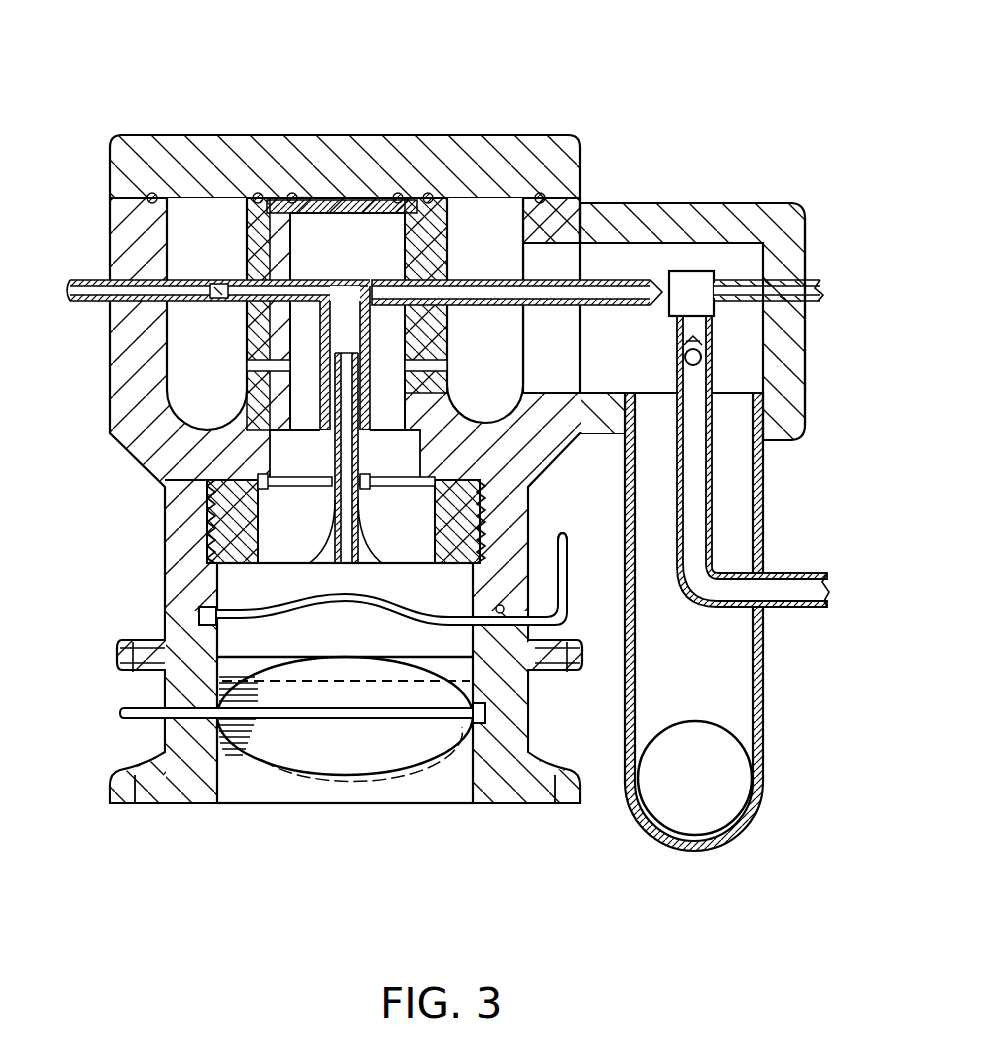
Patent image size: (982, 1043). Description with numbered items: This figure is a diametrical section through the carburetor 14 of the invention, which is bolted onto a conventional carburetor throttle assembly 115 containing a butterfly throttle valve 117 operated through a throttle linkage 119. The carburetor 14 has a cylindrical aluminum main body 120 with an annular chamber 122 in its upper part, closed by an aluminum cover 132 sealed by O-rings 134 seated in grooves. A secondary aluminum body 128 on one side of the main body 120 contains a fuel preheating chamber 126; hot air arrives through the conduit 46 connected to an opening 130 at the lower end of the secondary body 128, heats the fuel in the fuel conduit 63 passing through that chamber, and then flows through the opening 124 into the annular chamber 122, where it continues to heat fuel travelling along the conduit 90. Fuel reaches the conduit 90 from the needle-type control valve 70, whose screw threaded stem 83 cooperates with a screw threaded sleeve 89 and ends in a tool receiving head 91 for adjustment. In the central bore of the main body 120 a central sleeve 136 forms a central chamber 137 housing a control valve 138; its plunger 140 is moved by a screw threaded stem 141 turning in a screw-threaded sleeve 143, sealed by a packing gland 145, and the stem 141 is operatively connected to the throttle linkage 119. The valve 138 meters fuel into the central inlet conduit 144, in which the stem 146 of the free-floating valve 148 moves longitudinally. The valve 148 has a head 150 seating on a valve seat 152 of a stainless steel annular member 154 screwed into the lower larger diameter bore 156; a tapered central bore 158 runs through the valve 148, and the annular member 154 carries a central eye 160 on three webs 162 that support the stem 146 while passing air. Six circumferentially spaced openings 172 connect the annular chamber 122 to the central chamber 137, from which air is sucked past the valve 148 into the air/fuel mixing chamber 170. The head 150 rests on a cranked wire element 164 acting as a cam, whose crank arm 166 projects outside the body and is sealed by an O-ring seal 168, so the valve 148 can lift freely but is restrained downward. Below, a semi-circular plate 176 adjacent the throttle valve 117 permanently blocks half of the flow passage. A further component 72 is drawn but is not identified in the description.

The carburetor 14 is at (110, 87).
The conduit 46 is at (648, 828).
The fuel conduit 63 is at (778, 608).
The control valve 70 is at (655, 250).
The check valve 72 is at (702, 358).
The screw threaded stem 83 is at (765, 262).
The screw threaded sleeve 89 is at (752, 281).
The conduit 90 is at (485, 307).
The tool receiving head 91 is at (817, 281).
The carburetor throttle assembly 115 is at (173, 735).
The throttle valve 117 is at (353, 757).
The throttle linkage 119 is at (140, 716).
The main body 120 is at (118, 367).
The annular chamber 122 is at (188, 210).
The opening 124 is at (536, 244).
The fuel preheating chamber 126 is at (808, 242).
The secondary body 128 is at (648, 208).
The opening 130 is at (722, 478).
The cover 132 is at (398, 152).
The O-rings 134 is at (152, 193).
The central sleeve 136 is at (302, 196).
The central chamber 137 is at (343, 279).
The control valve 138 is at (313, 245).
The plunger 140 is at (372, 240).
The screw threaded stem 141 is at (152, 287).
The screw-threaded sleeve 143 is at (187, 297).
The central inlet conduit 144 is at (318, 318).
The packing gland 145 is at (218, 283).
The stem 146 is at (280, 393).
The valve 148 is at (215, 548).
The head 150 is at (237, 588).
The valve seat 152 is at (245, 578).
The annular member 154 is at (217, 502).
The lower larger diameter bore 156 is at (507, 663).
The central bore 158 is at (330, 443).
The central eye 160 is at (365, 477).
The webs 162 is at (295, 527).
The cranked wire element 164 is at (200, 616).
The crank arm 166 is at (590, 566).
The O-ring seal 168 is at (504, 612).
The mixing chamber 170 is at (233, 662).
The openings 172 is at (238, 379).
The semi-circular plate 176 is at (490, 722).